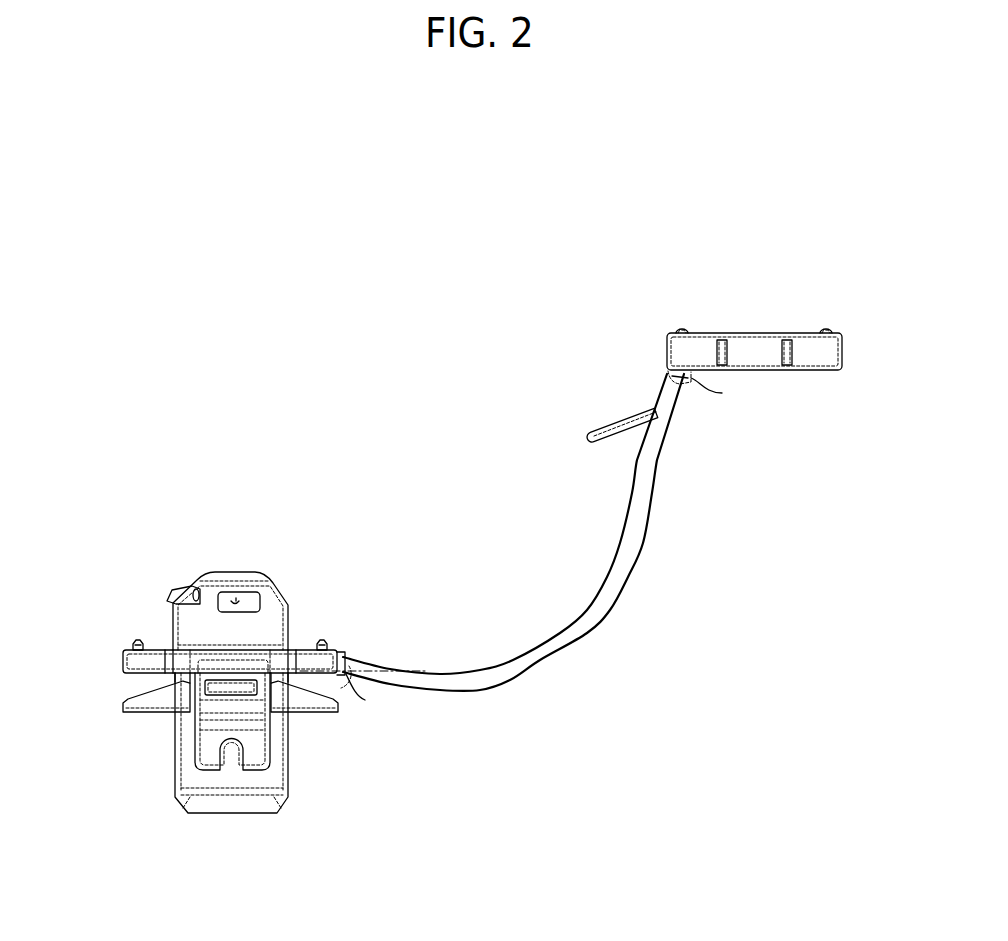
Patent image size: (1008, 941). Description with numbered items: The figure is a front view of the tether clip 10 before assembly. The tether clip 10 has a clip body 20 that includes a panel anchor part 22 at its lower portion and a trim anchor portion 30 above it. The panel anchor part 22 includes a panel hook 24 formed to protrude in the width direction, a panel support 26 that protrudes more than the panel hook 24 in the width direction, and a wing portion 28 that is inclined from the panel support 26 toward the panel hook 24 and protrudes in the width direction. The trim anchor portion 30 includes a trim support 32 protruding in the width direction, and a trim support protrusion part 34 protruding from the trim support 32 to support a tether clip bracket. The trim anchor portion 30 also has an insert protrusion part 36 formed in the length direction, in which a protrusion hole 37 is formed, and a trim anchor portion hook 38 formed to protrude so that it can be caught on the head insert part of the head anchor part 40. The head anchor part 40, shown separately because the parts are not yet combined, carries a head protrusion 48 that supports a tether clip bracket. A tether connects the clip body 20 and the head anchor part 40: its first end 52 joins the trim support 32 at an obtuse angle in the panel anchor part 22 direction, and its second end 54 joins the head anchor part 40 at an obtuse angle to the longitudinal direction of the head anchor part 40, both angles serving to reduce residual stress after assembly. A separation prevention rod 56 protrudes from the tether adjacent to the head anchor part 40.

The tether clip 10 is at (410, 362).
The clip body 20 is at (327, 812).
The panel anchor part 22 is at (310, 736).
The panel hook 24 is at (240, 706).
The panel support 26 is at (222, 690).
The wing portion 28 is at (140, 703).
The trim anchor portion 30 is at (321, 600).
The trim support 32 is at (340, 654).
The trim support protrusion part 34 is at (136, 641).
The insert protrusion part 36 is at (258, 573).
The protrusion hole 37 is at (232, 598).
The trim anchor portion hook 38 is at (182, 591).
The head anchor part 40 is at (797, 392).
The head protrusion 48 is at (681, 330).
The first end 52 is at (368, 660).
The second end 54 is at (673, 380).
The separation prevention rod 56 is at (608, 430).